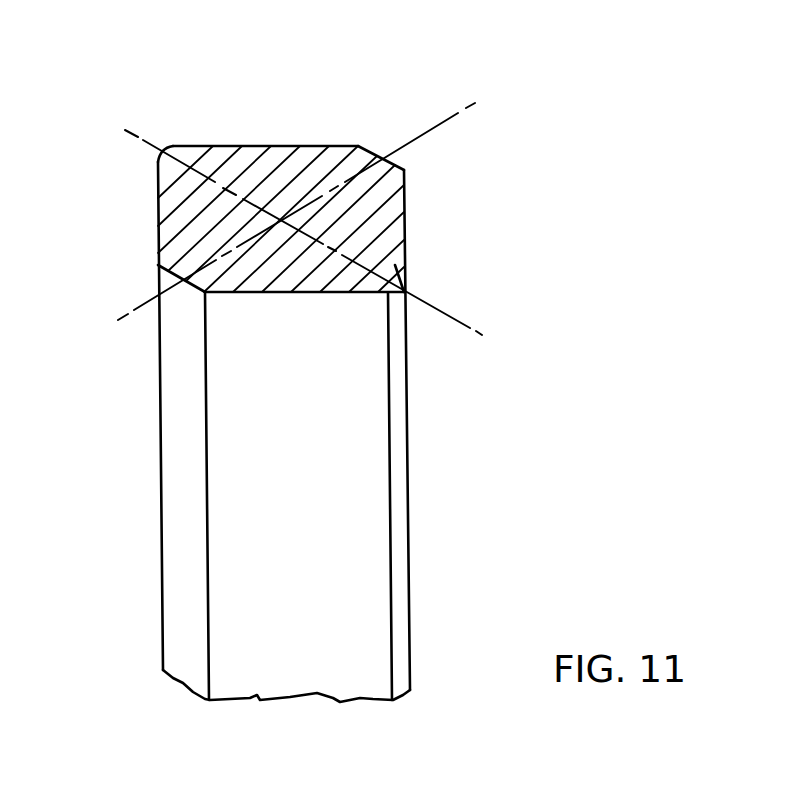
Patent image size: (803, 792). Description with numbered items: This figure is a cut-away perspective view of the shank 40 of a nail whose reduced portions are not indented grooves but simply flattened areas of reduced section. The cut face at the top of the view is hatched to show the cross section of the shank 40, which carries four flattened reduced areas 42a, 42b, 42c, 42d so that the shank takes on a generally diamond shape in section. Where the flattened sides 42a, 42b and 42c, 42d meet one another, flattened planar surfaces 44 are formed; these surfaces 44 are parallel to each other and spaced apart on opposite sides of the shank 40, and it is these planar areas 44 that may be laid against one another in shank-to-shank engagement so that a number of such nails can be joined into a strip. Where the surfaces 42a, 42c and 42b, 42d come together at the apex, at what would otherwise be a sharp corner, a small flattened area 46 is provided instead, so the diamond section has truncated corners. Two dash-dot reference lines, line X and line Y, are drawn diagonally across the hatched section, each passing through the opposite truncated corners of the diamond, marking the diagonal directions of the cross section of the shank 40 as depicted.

The shank 40 is at (305, 374).
The flattened reduced area 42a is at (312, 146).
The flattened reduced area 42b is at (407, 207).
The flattened reduced area 42c is at (158, 215).
The flattened reduced area 42d is at (320, 450).
The flattened planar surface 44 is at (384, 157).
The small flattened area 46 is at (165, 152).
The X axis X is at (450, 312).
The Y axis Y is at (450, 118).